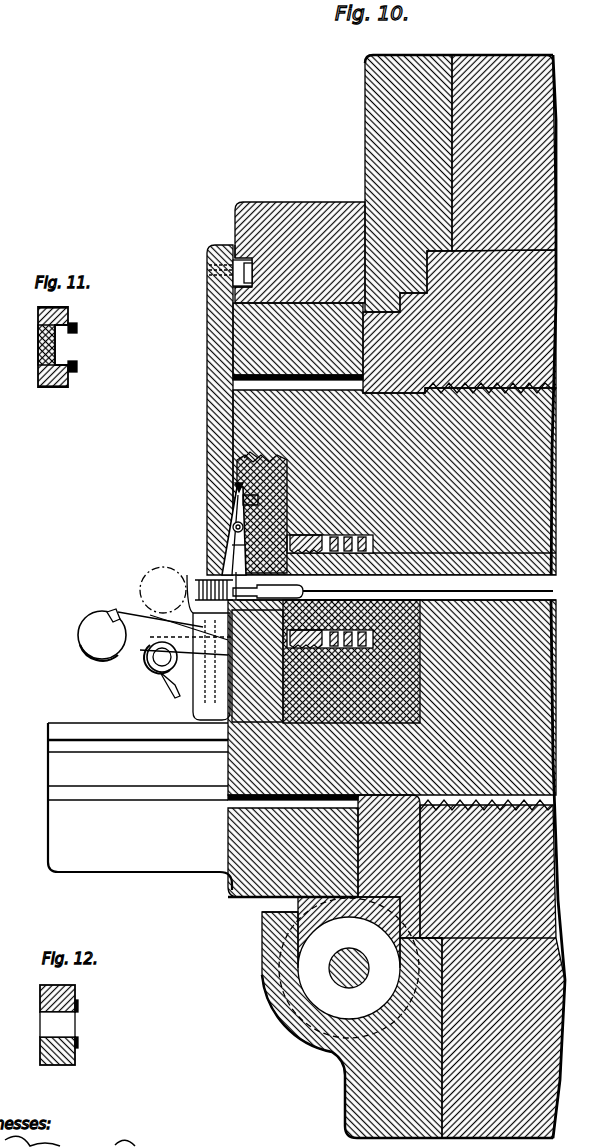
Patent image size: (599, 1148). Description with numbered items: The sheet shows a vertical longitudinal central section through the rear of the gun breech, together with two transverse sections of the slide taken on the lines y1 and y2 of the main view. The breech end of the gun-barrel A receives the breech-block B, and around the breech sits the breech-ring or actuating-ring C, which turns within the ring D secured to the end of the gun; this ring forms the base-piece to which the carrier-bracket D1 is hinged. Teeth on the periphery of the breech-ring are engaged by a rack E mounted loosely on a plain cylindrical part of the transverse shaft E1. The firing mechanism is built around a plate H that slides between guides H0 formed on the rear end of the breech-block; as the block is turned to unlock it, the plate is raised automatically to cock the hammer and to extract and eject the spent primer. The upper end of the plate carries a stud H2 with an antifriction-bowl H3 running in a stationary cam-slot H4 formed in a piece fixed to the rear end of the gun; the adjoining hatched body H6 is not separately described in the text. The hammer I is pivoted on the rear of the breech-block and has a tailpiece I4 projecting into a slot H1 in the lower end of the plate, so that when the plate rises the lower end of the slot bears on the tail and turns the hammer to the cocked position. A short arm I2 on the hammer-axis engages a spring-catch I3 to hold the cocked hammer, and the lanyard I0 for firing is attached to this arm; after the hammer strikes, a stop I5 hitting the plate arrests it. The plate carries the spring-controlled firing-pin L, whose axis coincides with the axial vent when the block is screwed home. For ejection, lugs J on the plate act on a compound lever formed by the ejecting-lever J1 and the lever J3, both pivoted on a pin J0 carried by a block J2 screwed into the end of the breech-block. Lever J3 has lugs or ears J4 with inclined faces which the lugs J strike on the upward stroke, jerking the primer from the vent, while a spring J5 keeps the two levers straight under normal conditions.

In FIG. 10, the breech end of the gun-barrel A is at (492, 596).
In FIG. 10, the breech-block B is at (394, 481).
In FIG. 10, the breech-ring or actuating-ring C is at (457, 594).
In FIG. 10, the ring D is at (407, 596).
In FIG. 10, the carrier-bracket D1 is at (298, 341).
In FIG. 10, the rack E is at (349, 932).
In FIG. 10, the shaft E1 is at (349, 968).
In FIG. 10, the sliding plate H is at (220, 410).
In FIG. 11, the sliding plate H is at (40, 354).
In FIG. 12, the sliding plate H is at (78, 1003).
In FIG. 11, the guides H0 is at (40, 308).
In FIG. 12, the guides H0 is at (42, 986).
In FIG. 12, the slot H1 is at (57, 1024).
In FIG. 10, the stud H2 is at (233, 270).
In FIG. 10, the antifriction-bowl H3 is at (240, 288).
In FIG. 10, the cam-slot H4 is at (238, 246).
In FIG. 10, the slide block H6 is at (300, 252).
In FIG. 10, the hammer I is at (102, 635).
In FIG. 10, the lanyard I0 is at (158, 672).
In FIG. 10, the short arm I2 is at (211, 666).
In FIG. 10, the spring-catch I3 is at (178, 692).
In FIG. 10, the tailpiece I4 is at (184, 648).
In FIG. 10, the stop I5 is at (124, 612).
In FIG. 10, the lugs J is at (232, 536).
In FIG. 11, the lugs J is at (77, 347).
In FIG. 10, the pin J0 is at (233, 526).
In FIG. 10, the ejecting-lever J1 is at (232, 546).
In FIG. 10, the block J2 is at (259, 588).
In FIG. 10, the lever J3 is at (251, 448).
In FIG. 10, the lug or ear J4 is at (236, 486).
In FIG. 10, the spring J5 is at (258, 500).
In FIG. 10, the firing-pin L is at (190, 591).
In FIG. 10, the section line y1 is at (230, 554).
In FIG. 10, the section line y2 is at (191, 631).